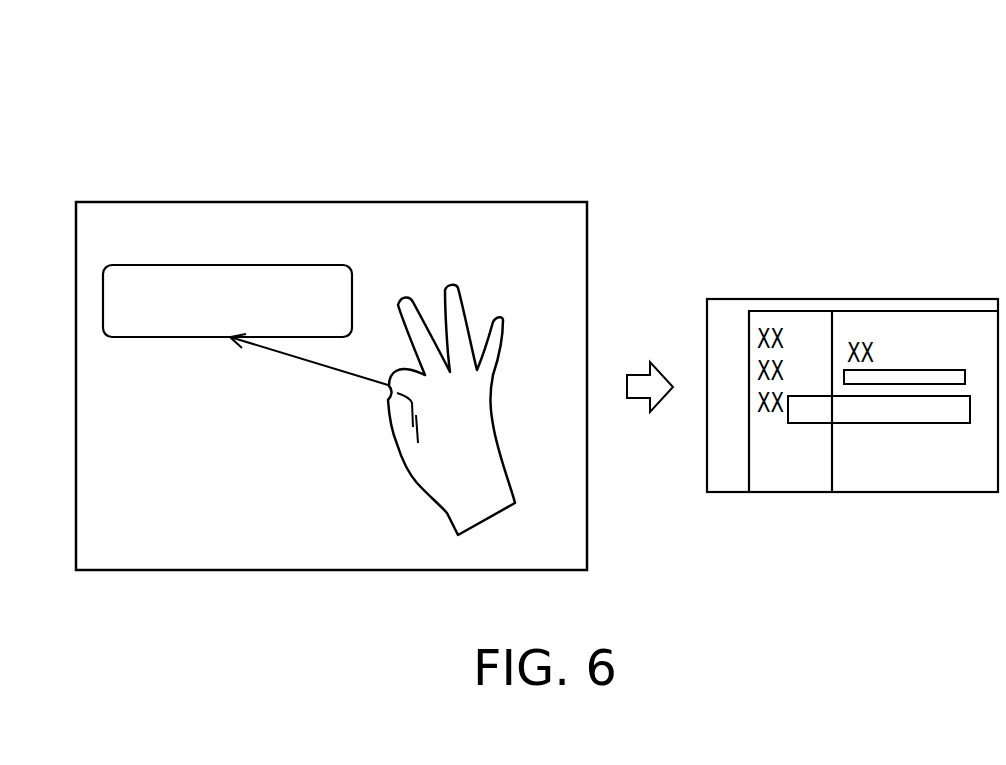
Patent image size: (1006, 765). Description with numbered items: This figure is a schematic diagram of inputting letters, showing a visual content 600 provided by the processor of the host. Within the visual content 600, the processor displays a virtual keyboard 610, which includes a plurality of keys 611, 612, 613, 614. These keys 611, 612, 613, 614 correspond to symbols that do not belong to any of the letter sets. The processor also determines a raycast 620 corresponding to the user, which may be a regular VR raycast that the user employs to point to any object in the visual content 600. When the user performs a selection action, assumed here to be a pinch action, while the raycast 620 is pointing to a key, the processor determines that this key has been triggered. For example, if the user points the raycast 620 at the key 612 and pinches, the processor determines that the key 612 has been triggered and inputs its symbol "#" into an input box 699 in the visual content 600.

The visual content 600 is at (483, 222).
The virtual keyboard 610 is at (158, 339).
The key 611 is at (147, 265).
The key 612 is at (205, 265).
The key 613 is at (248, 265).
The key 614 is at (302, 265).
The raycast 620 is at (347, 373).
The input box 699 is at (808, 423).